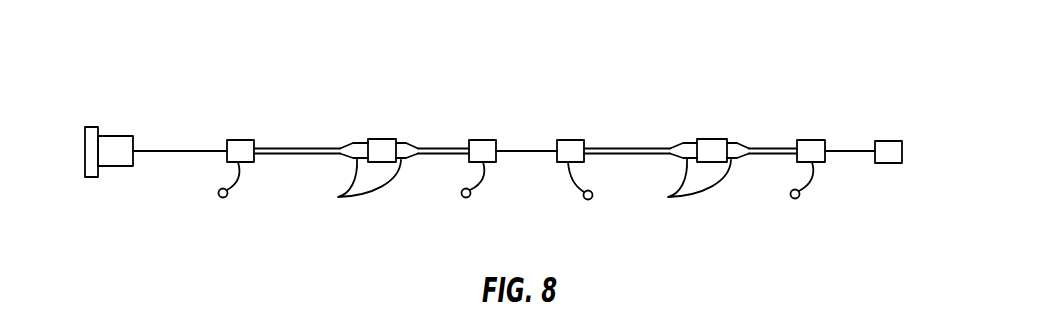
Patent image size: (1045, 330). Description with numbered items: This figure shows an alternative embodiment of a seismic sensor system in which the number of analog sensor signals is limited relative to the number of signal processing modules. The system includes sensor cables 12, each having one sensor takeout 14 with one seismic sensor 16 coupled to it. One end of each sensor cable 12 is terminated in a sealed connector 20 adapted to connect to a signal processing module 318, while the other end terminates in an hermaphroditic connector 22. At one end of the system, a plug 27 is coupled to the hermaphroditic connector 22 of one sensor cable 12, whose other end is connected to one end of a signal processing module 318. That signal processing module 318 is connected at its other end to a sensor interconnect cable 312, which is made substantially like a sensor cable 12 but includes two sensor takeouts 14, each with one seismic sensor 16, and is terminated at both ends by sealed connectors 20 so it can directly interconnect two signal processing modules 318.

The sensor cable 12 is at (278, 137).
The sensor interconnect cable 312 is at (507, 137).
The sensor takeout 14 is at (240, 140).
The seismic sensor 16 is at (220, 198).
The sealed connector 20 is at (338, 197).
The hermaphroditic connector 22 is at (115, 136).
The plug 27 is at (90, 127).
The signal processing module 318 is at (381, 139).